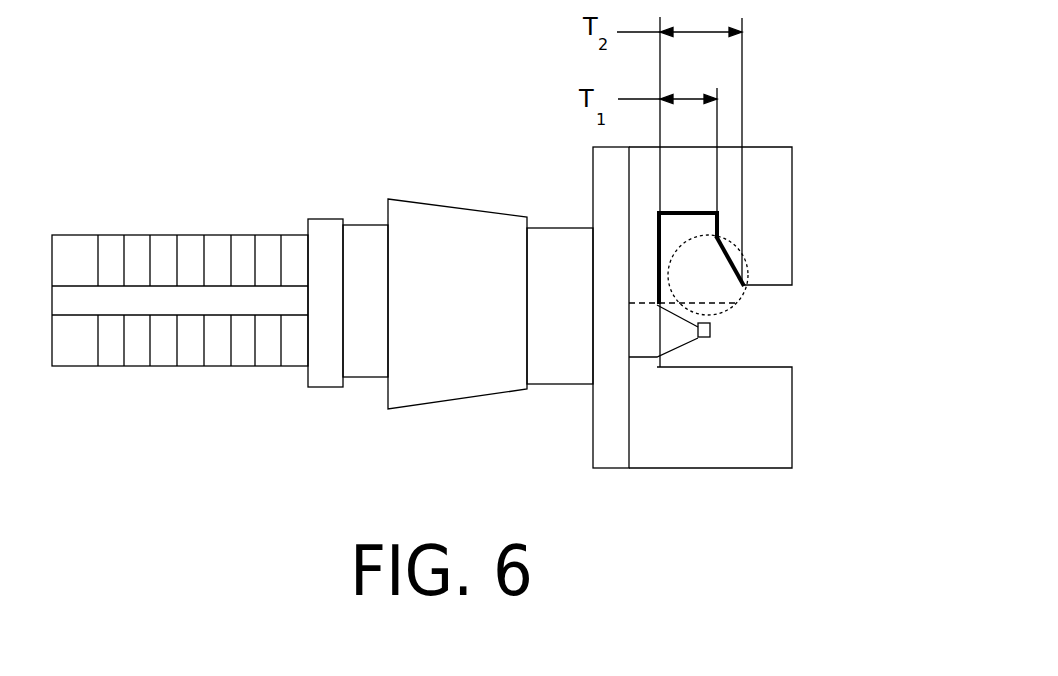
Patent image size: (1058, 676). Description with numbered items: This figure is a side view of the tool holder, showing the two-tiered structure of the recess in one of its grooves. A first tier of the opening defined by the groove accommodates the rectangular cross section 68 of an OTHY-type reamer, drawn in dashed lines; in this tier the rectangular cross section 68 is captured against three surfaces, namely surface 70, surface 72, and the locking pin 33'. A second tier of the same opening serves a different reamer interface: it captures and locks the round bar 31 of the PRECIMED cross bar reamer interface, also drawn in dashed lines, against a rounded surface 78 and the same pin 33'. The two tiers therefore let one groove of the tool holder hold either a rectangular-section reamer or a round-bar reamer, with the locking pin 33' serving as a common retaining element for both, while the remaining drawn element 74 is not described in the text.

The surface 70 is at (706, 164).
The surface 72 is at (657, 213).
The holder bore wall 74 is at (718, 235).
The rounded surface 78 is at (733, 265).
The rectangular cross section 68 is at (750, 265).
The round bar 31 is at (730, 300).
The locking pin 33' is at (761, 379).